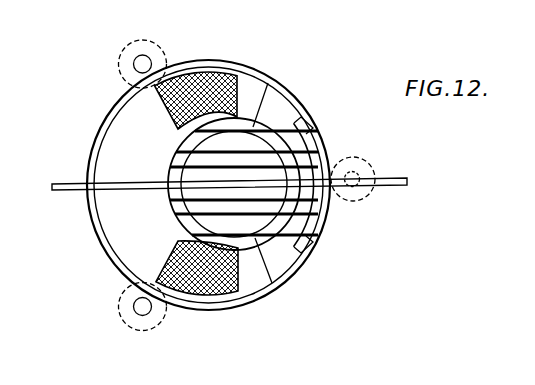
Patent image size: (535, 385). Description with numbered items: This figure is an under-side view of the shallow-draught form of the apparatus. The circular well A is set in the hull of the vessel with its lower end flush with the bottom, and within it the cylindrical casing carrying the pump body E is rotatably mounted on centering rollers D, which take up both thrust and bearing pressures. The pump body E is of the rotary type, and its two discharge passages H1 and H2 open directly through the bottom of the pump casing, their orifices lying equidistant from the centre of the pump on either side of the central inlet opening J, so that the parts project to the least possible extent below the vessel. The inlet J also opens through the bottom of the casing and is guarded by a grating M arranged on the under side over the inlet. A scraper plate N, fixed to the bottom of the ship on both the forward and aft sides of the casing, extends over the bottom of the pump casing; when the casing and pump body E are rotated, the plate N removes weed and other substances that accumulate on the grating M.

The well A is at (110, 111).
The pump body E is at (117, 134).
The discharge passage H1 is at (212, 72).
The discharge passage H2 is at (207, 294).
The inlet opening J is at (292, 157).
The grating M is at (286, 200).
The scraper plate N is at (67, 184).
The centering rollers D is at (157, 44).